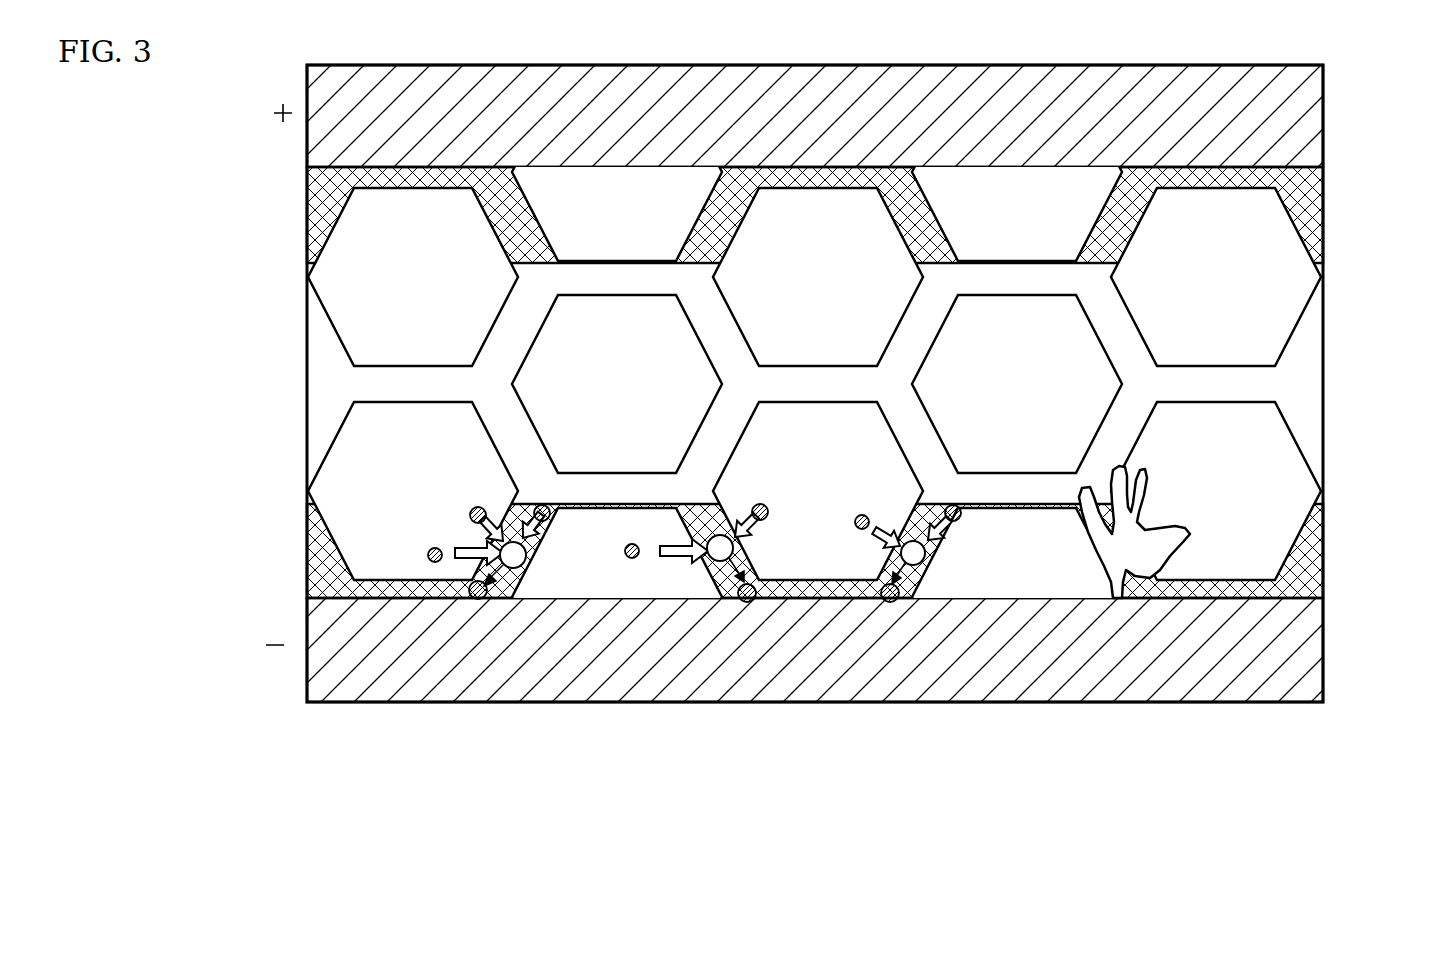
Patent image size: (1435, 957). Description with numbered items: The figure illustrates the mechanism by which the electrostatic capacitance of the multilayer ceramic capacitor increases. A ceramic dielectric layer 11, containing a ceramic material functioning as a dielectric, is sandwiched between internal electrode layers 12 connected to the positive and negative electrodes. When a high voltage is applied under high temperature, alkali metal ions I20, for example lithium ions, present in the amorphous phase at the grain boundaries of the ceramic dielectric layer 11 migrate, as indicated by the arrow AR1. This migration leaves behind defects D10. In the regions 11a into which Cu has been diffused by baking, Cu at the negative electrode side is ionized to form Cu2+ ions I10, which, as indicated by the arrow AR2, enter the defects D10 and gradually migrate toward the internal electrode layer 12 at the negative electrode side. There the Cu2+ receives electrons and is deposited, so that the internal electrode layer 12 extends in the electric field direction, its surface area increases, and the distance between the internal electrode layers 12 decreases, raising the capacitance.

The internal electrode layer 12 is at (1305, 121).
The region in which Cu has been diffused 11a is at (1305, 212).
The ceramic dielectric layer 11 is at (1297, 392).
The Cu2+ ion I10 is at (437, 562).
The alkali metal ion I20 is at (750, 602).
The defect D10 is at (513, 568).
The arrow indicating migration of alkali metal ions AR1 is at (740, 580).
The arrow indicating migration of Cu2+ AR2 is at (460, 568).